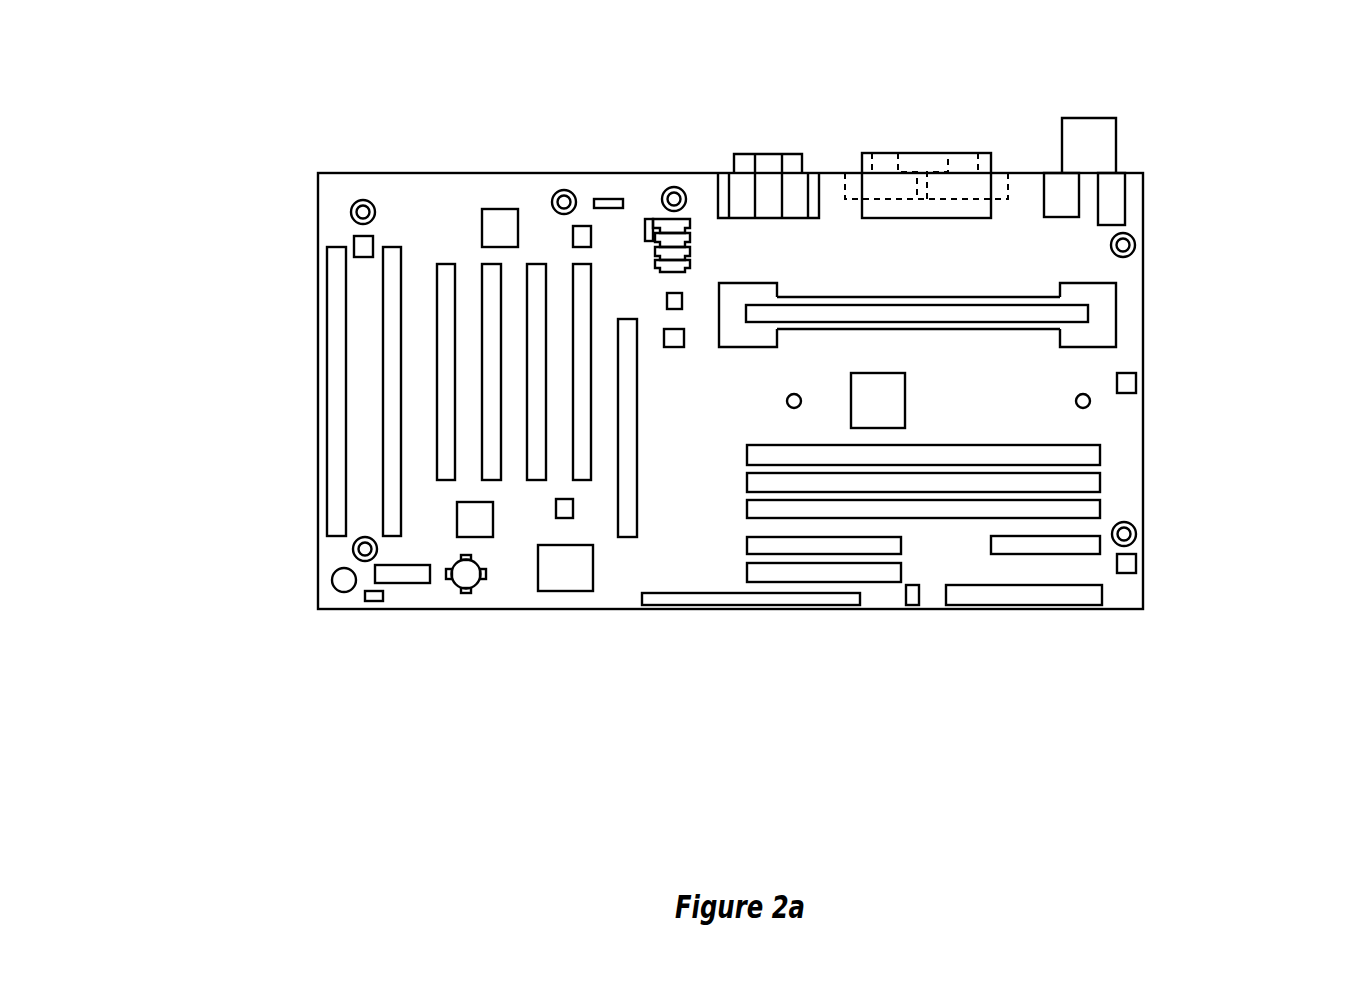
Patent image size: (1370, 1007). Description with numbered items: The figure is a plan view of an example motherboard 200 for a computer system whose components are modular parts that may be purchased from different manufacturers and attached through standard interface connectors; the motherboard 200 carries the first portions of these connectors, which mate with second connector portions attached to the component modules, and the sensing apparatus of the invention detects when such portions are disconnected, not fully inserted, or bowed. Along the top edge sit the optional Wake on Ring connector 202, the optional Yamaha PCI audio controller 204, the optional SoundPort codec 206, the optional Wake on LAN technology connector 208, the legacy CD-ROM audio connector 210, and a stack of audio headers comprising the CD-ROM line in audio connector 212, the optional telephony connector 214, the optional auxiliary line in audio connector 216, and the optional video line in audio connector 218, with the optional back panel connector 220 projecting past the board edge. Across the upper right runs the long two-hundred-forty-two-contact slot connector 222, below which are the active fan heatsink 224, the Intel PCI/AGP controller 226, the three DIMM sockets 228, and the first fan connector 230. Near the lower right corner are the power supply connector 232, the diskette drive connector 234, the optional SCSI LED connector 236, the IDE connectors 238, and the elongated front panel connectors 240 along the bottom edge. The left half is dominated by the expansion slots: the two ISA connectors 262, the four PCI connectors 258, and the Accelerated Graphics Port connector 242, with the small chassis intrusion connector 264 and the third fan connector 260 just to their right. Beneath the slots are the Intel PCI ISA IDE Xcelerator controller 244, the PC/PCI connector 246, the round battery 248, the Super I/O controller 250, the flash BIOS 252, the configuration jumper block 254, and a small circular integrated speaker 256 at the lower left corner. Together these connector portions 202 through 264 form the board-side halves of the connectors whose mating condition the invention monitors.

The motherboard 200 is at (826, 330).
The Wake on Ring connector 202 is at (385, 184).
The Yamaha YMF740 PCI audio controller 204 is at (499, 179).
The Analog Devices AD1819A SoundPort codec 206 is at (563, 189).
The Wake on LAN technology connector 208 is at (608, 159).
The legacy CD-ROM audio connector 210 is at (653, 186).
The CD-ROM line in audio connector 212 is at (724, 230).
The telephony connector 214 is at (749, 241).
The auxiliary line in audio connector 216 is at (725, 258).
The video line in audio connector 218 is at (749, 269).
The back panel connector 220 is at (917, 145).
The 242-contact slot connector 222 is at (981, 315).
The active fan heatsink 224 is at (1180, 383).
The Intel 82443BX PCI/AGP controller 226 is at (1047, 402).
The DIMM sockets 228 is at (995, 481).
The fan 1 connector 230 is at (1180, 563).
The power supply connector 232 is at (1058, 613).
The diskette drive connector 234 is at (1024, 637).
The SCSI LED connector 236 is at (847, 632).
The IDE connectors 238 is at (897, 637).
The front panel connectors 240 is at (751, 641).
The Accelerated Graphics Port (AGP) connector 242 is at (432, 428).
The Intel 82371EB PCI ISA IDE Xcelerator (PIIX4E) controller 244 is at (565, 617).
The PC/PCI connector 246 is at (591, 613).
The battery 248 is at (463, 622).
The SMSC FDC37M707 Super I/O controller 250 is at (487, 615).
The flash BIOS 252 is at (402, 646).
The configuration jumper block 254 is at (375, 637).
The speaker 256 is at (334, 648).
The PCI connectors 258 is at (391, 372).
The fan 3 connector 260 is at (456, 358).
The ISA connectors 262 is at (296, 391).
The chassis intrusion connector 264 is at (455, 298).